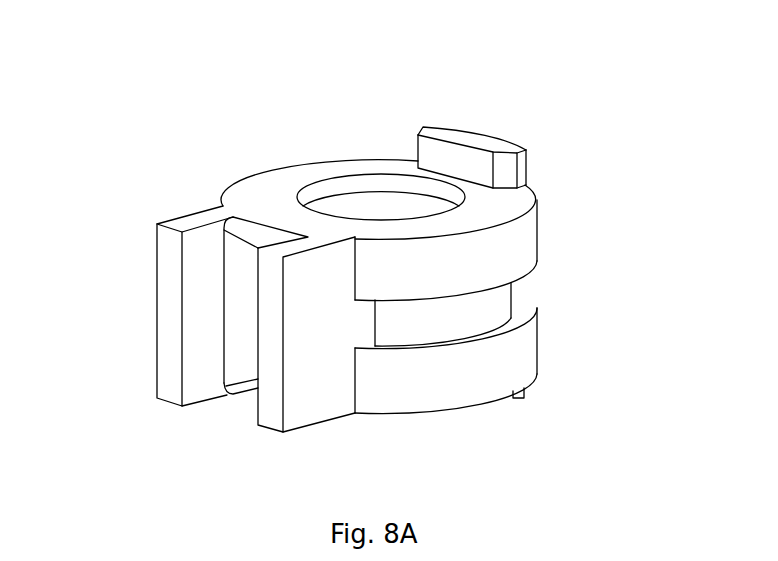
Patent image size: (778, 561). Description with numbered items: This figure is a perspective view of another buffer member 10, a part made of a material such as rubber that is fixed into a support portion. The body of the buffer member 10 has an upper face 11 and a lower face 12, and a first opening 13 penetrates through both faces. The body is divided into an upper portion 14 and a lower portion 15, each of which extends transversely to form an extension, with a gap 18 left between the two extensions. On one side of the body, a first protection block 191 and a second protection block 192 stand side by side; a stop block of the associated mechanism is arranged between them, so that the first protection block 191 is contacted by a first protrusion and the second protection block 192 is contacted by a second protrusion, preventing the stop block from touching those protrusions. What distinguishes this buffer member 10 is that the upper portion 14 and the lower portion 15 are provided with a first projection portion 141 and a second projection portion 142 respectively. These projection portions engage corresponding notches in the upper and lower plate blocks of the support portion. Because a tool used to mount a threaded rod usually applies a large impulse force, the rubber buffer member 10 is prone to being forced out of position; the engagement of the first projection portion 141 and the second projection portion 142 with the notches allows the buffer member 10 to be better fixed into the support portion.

The buffer member 10 is at (232, 146).
The upper face 11 is at (326, 165).
The first opening 13 is at (385, 207).
The second projection portion 142 is at (470, 140).
The upper portion 14 is at (510, 238).
The gap 18 is at (517, 287).
The lower portion 15 is at (512, 364).
The lower face 12 is at (427, 413).
The first projection portion 141 is at (522, 397).
The first protection block 191 is at (172, 308).
The second protection block 192 is at (272, 338).